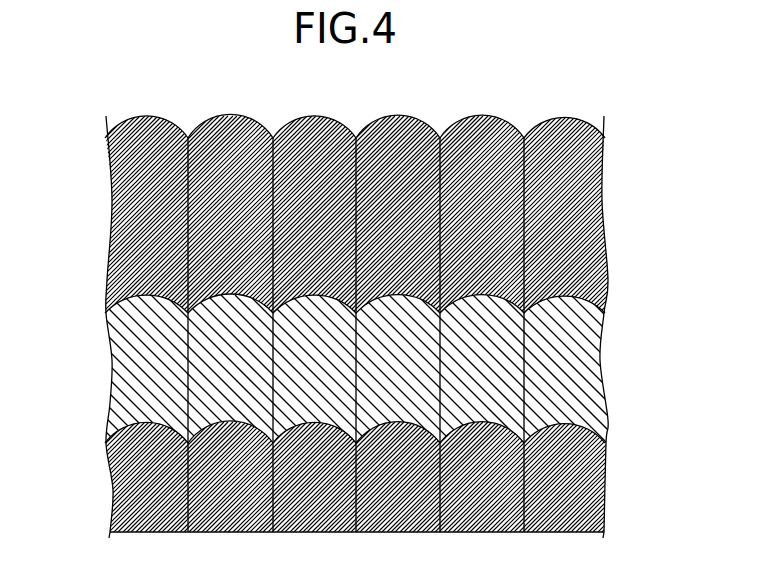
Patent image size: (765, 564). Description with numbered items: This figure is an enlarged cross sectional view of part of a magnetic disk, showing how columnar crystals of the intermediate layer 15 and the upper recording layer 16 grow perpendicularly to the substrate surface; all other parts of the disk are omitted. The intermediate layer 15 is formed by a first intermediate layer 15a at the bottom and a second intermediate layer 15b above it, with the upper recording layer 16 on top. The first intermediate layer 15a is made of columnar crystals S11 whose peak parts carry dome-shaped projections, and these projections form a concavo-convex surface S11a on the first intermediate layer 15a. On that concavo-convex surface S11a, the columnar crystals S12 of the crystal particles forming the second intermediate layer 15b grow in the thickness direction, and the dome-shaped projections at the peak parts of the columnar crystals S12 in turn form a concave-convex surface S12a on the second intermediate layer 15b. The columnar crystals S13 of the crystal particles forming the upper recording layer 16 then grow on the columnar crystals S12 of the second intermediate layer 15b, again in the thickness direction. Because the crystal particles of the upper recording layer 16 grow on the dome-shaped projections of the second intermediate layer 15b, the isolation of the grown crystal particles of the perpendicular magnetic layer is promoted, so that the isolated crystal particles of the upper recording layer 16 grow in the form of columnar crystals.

The upper recording layer 16 is at (382, 326).
The intermediate layer 15 is at (373, 399).
The first intermediate layer 15a is at (358, 462).
The second intermediate layer 15b is at (373, 354).
The columnar crystals S11 is at (208, 481).
The concavo-convex surface S11a is at (232, 420).
The columnar crystals S12 is at (208, 360).
The concave-convex surface S12a is at (232, 297).
The columnar crystals S13 is at (208, 201).